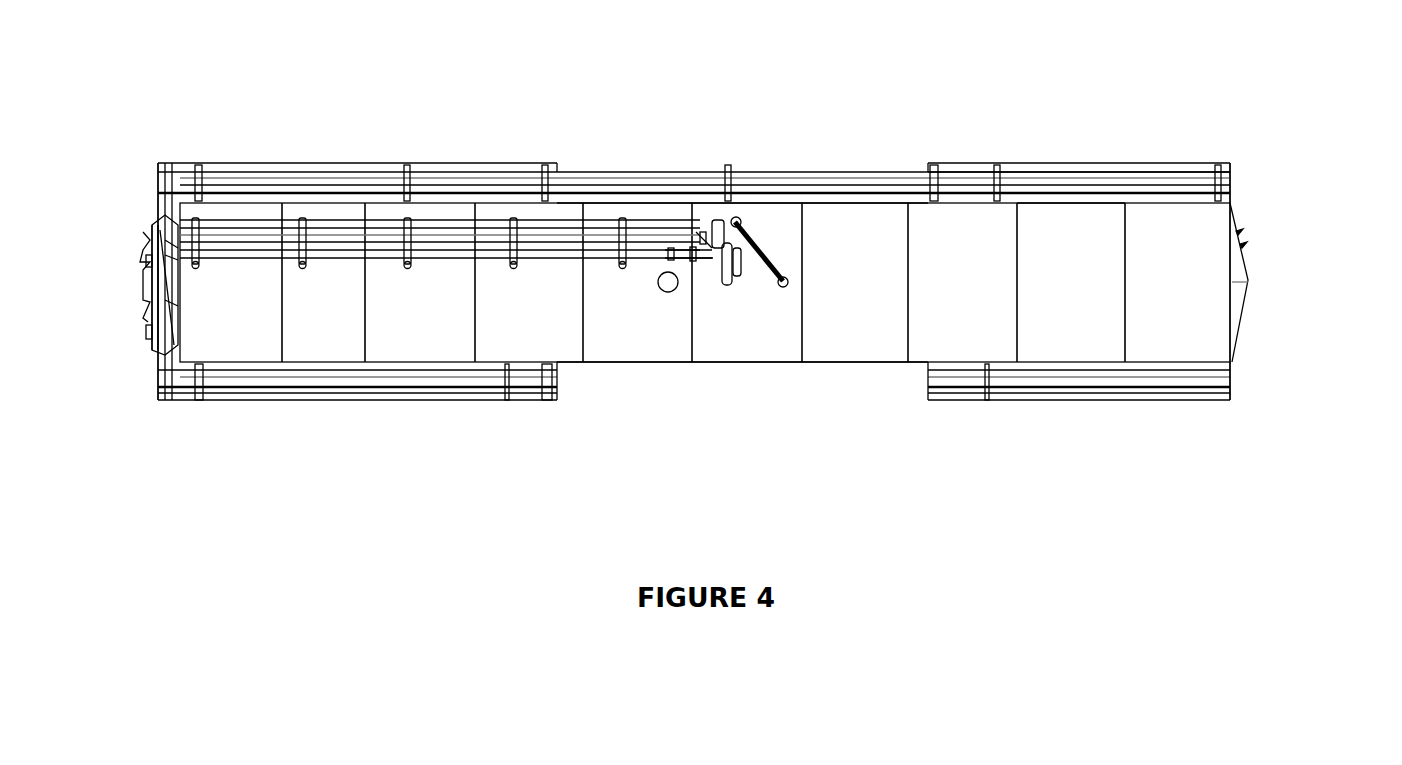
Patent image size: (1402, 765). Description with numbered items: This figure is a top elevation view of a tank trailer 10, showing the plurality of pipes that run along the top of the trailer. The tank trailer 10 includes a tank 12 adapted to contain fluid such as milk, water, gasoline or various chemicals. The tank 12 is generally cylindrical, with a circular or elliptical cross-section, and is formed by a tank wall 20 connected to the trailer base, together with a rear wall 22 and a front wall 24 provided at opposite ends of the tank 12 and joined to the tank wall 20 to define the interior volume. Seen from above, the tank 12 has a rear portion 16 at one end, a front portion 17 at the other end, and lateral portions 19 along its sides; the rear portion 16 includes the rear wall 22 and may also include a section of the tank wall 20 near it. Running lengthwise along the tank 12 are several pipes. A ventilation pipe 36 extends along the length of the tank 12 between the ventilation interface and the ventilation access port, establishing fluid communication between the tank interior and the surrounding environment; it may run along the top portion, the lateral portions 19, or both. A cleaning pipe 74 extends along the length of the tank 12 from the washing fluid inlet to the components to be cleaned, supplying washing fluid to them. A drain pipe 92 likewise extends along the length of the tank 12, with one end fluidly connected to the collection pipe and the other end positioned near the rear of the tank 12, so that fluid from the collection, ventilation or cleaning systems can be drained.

The tank trailer 10 is at (703, 262).
The tank 12 is at (623, 363).
The rear portion 16 is at (103, 408).
The front portion 17 is at (1282, 148).
The lateral portions 19 is at (767, 170).
The tank wall 20 is at (1113, 238).
The rear wall 22 is at (163, 270).
The front wall 24 is at (1247, 272).
The ventilation pipe 36 is at (546, 262).
The cleaning pipe 74 is at (453, 222).
The drain pipe 92 is at (592, 235).